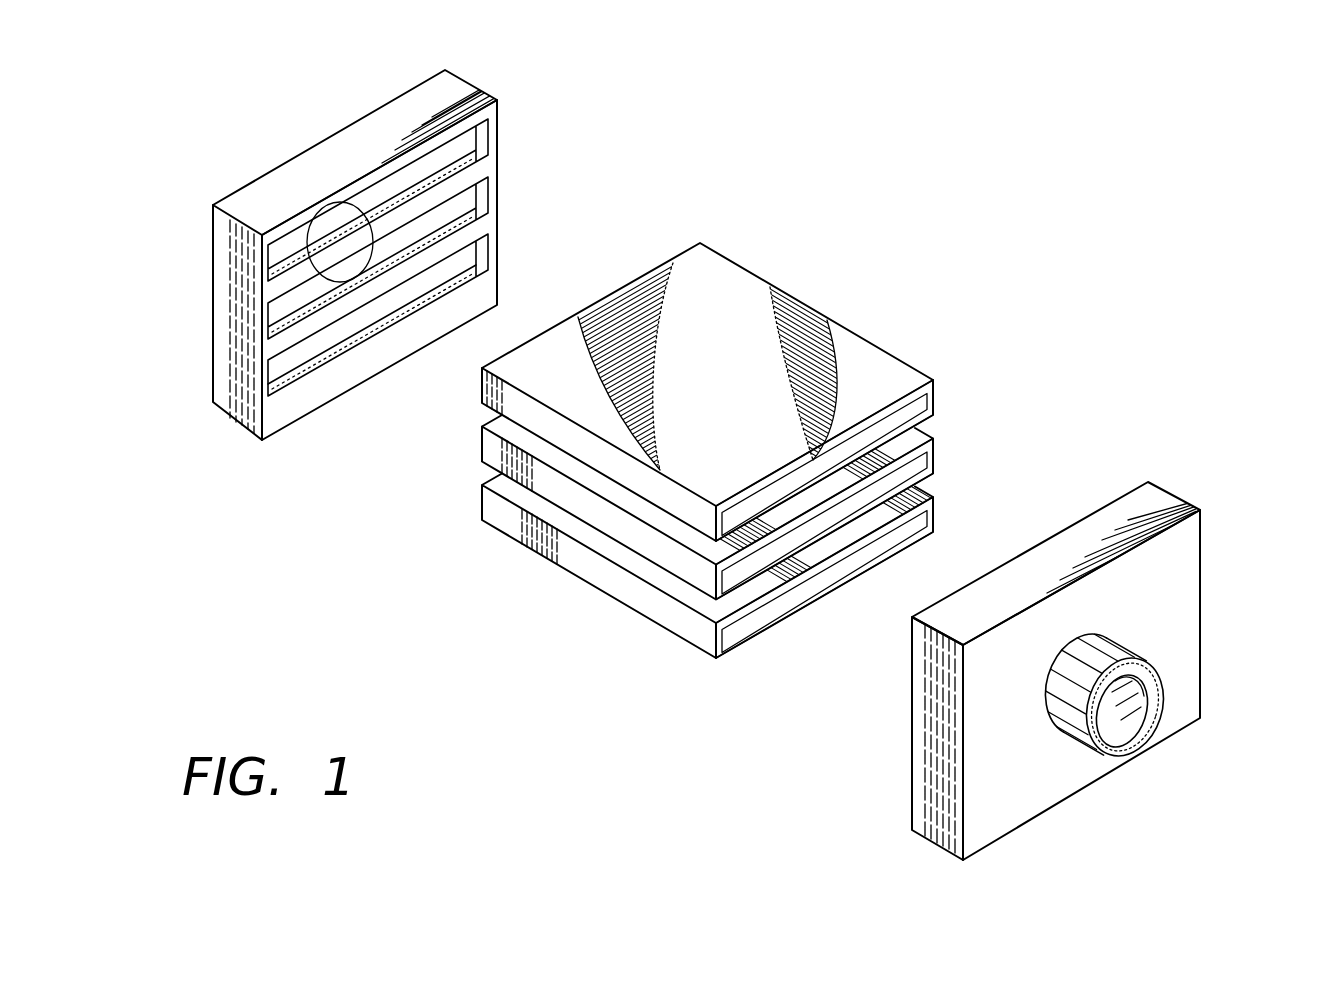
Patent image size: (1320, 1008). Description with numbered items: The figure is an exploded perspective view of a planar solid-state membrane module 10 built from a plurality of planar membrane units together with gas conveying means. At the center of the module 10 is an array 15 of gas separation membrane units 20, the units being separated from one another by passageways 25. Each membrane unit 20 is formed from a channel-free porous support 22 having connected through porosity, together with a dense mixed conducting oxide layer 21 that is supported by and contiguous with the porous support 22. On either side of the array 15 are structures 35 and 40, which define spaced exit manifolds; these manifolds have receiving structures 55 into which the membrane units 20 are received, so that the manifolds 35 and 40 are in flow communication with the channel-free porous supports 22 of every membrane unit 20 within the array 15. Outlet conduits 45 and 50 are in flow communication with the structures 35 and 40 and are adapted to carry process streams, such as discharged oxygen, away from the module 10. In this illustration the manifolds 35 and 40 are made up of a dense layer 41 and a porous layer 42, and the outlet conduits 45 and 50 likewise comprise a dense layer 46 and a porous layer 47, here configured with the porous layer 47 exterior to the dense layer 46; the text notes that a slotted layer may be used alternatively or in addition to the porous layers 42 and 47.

The planar solid-state membrane module 10 is at (708, 446).
The array of gas separation membrane units 15 is at (732, 260).
The gas separation membrane unit 20 is at (708, 446).
The dense mixed conducting oxide layer 21 is at (713, 640).
The channel-free porous support 22 is at (829, 576).
The passageway 25 is at (933, 545).
The exit manifold structure 35 is at (1097, 686).
The exit manifold structure 40 is at (364, 275).
The dense layer 41 is at (286, 387).
The porous layer 42 is at (286, 373).
The outlet conduit 45 is at (1132, 740).
The dense layer 46 is at (1147, 710).
The porous layer 47 is at (1160, 683).
The outlet conduit 50 is at (353, 213).
The receiving structure 55 is at (497, 275).